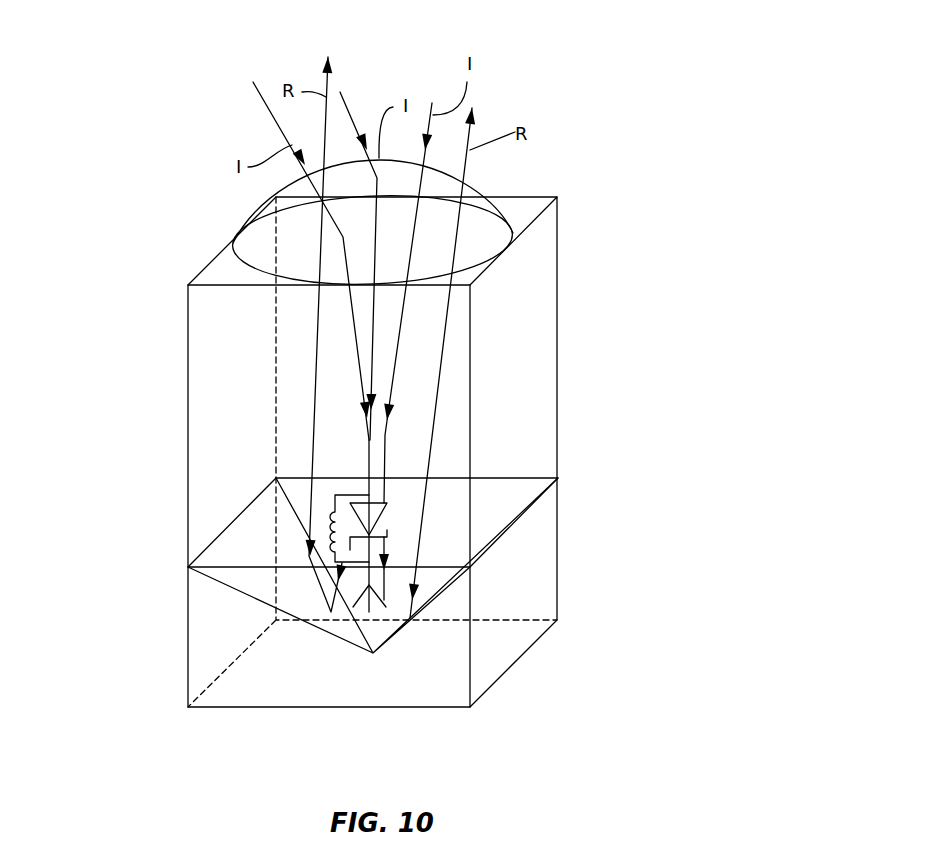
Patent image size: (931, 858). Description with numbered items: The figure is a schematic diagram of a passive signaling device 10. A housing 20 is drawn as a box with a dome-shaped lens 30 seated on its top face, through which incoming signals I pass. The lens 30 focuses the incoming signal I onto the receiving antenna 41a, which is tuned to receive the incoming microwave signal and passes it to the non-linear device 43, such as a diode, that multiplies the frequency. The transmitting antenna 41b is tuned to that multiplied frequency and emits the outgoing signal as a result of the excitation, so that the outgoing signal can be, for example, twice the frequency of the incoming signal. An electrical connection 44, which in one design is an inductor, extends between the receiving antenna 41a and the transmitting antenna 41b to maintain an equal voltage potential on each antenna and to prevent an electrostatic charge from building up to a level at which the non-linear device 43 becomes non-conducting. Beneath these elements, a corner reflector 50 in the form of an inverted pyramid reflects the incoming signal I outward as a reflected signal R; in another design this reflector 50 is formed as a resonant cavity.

The signaling device 10 is at (692, 152).
The housing 20 is at (558, 347).
The lens 30 is at (503, 195).
The receiving antenna 41a is at (357, 428).
The transmitting antenna 41b is at (385, 600).
The non-linear device 43 is at (388, 508).
The electrical connection 44 is at (327, 537).
The corner reflector 50 is at (260, 600).